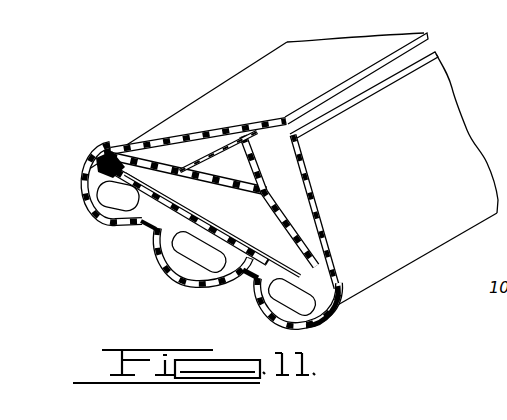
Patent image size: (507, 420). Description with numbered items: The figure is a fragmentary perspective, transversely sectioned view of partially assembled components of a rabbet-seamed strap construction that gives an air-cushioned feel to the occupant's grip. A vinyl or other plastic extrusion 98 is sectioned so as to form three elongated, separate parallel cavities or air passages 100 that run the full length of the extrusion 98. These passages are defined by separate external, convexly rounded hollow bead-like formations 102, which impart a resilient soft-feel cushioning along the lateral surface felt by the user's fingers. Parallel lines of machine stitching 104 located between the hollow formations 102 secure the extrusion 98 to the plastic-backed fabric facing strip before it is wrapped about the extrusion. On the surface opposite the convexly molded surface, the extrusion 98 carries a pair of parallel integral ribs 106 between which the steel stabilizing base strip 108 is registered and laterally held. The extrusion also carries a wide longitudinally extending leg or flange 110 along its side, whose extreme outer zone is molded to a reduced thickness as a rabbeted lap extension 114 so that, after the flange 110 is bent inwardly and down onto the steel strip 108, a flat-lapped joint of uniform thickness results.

The plastic extrusion 98 is at (194, 236).
The cavities or air passages 100 is at (110, 195).
The hollow bead-like formations 102 is at (193, 262).
The lines of machine stitching 104 is at (243, 275).
The integral ribs 106 is at (107, 152).
The steel stabilizing base strip 108 is at (163, 173).
The leg or flange 110 is at (178, 153).
The rabbeted lap extensions 114 is at (225, 163).